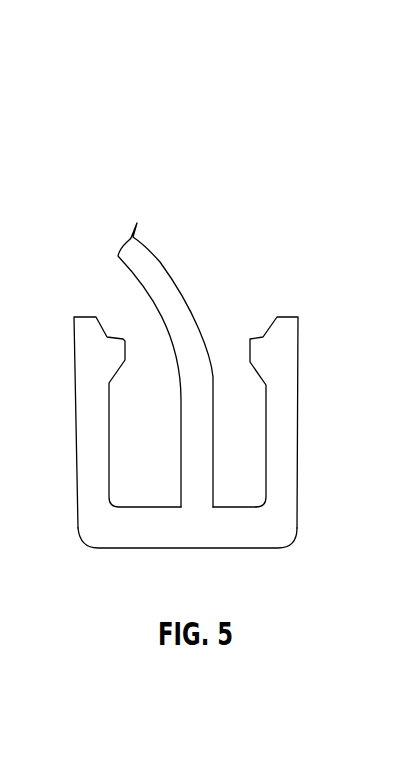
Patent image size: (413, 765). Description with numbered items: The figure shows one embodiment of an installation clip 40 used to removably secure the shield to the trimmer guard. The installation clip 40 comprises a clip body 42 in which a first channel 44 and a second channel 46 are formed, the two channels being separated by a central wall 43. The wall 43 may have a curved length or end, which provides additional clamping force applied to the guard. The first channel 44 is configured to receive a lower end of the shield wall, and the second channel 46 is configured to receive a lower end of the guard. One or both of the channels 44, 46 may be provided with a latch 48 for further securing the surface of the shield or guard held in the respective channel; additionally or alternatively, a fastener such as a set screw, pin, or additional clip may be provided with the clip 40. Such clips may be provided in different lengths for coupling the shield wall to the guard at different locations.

The installation clip 40 is at (200, 208).
The clip body 42 is at (247, 531).
The wall 43 is at (165, 284).
The first channel 44 is at (132, 333).
The second channel 46 is at (228, 358).
The latch 48 is at (257, 347).